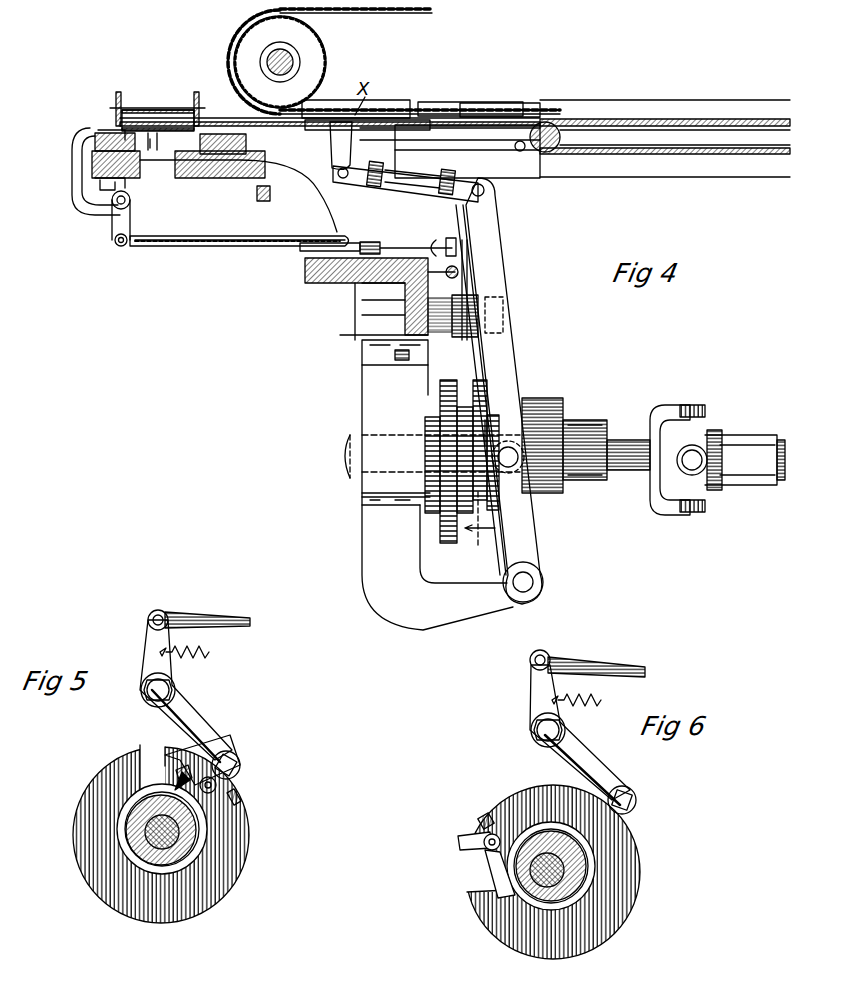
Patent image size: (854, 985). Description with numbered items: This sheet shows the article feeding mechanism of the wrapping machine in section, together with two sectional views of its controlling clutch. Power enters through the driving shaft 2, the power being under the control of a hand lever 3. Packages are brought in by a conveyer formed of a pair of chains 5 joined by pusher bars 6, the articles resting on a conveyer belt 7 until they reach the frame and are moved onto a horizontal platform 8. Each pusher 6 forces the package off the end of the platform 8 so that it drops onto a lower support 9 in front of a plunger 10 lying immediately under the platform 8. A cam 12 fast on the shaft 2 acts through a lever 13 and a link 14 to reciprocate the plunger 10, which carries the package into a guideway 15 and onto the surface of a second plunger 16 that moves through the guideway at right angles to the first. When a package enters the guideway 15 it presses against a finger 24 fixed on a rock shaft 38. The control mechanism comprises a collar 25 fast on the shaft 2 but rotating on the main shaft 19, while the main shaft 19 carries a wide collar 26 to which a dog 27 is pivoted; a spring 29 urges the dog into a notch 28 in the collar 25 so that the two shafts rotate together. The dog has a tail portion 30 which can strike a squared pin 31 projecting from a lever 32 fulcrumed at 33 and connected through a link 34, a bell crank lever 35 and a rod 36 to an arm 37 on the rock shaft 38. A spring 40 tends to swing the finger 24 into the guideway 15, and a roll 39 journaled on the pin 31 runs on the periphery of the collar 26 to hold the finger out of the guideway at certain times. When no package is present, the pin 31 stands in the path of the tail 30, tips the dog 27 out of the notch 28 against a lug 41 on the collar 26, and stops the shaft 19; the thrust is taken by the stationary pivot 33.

In FIG. 4, the driving shaft 2 is at (633, 445).
In FIG. 4, the hand lever 3 is at (481, 421).
In FIG. 4, the chains 5 is at (480, 522).
In FIG. 4, the pusher bars 6 is at (528, 104).
In FIG. 4, the conveyer belt 7 is at (642, 150).
In FIG. 4, the platform 8 is at (498, 122).
In FIG. 4, the lower support 9 is at (318, 132).
In FIG. 4, the plunger 10 is at (248, 122).
In FIG. 4, the cam 12 is at (555, 408).
In FIG. 4, the lever 13 is at (508, 360).
In FIG. 4, the link 14 is at (405, 186).
In FIG. 4, the guideway 15 is at (157, 111).
In FIG. 4, the plunger 16 is at (152, 152).
In FIG. 4, the main shaft 19 is at (350, 460).
In FIG. 5, the main shaft 19 is at (135, 855).
In FIG. 6, the main shaft 19 is at (585, 862).
In FIG. 4, the finger 24 is at (80, 132).
In FIG. 4, the collar 25 is at (470, 500).
In FIG. 5, the collar 25 is at (205, 838).
In FIG. 6, the collar 25 is at (525, 895).
In FIG. 4, the wide collar 26 is at (440, 535).
In FIG. 5, the wide collar 26 is at (80, 808).
In FIG. 6, the wide collar 26 is at (620, 905).
In FIG. 5, the dog 27 is at (190, 765).
In FIG. 6, the dog 27 is at (490, 862).
In FIG. 5, the notch 28 is at (172, 782).
In FIG. 5, the spring 29 is at (178, 776).
In FIG. 5, the tail portion 30 is at (215, 782).
In FIG. 6, the tail portion 30 is at (458, 842).
In FIG. 5, the squared pin 31 is at (241, 765).
In FIG. 4, the lever 32 is at (470, 272).
In FIG. 5, the lever 32 is at (195, 717).
In FIG. 6, the lever 32 is at (530, 712).
In FIG. 5, the fulcrum 33 is at (142, 684).
In FIG. 5, the link 34 is at (225, 617).
In FIG. 4, the bell crank lever 35 is at (436, 236).
In FIG. 4, the rod 36 is at (235, 246).
In FIG. 4, the arm 37 is at (117, 238).
In FIG. 4, the rock shaft 38 is at (112, 205).
In FIG. 6, the roll 39 is at (637, 802).
In FIG. 5, the spring 40 is at (206, 654).
In FIG. 6, the spring 40 is at (600, 703).
In FIG. 5, the lug 41 is at (238, 800).
In FIG. 6, the lug 41 is at (505, 815).